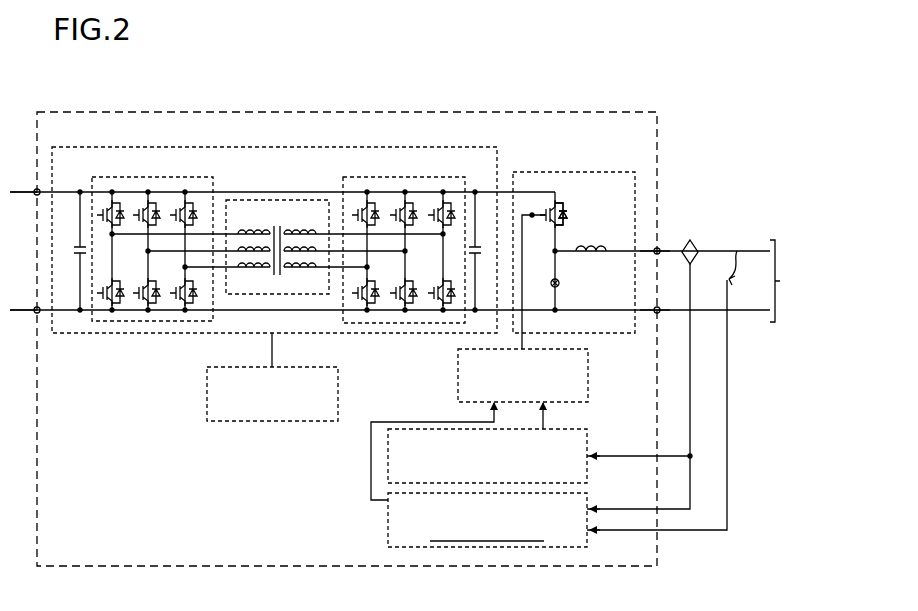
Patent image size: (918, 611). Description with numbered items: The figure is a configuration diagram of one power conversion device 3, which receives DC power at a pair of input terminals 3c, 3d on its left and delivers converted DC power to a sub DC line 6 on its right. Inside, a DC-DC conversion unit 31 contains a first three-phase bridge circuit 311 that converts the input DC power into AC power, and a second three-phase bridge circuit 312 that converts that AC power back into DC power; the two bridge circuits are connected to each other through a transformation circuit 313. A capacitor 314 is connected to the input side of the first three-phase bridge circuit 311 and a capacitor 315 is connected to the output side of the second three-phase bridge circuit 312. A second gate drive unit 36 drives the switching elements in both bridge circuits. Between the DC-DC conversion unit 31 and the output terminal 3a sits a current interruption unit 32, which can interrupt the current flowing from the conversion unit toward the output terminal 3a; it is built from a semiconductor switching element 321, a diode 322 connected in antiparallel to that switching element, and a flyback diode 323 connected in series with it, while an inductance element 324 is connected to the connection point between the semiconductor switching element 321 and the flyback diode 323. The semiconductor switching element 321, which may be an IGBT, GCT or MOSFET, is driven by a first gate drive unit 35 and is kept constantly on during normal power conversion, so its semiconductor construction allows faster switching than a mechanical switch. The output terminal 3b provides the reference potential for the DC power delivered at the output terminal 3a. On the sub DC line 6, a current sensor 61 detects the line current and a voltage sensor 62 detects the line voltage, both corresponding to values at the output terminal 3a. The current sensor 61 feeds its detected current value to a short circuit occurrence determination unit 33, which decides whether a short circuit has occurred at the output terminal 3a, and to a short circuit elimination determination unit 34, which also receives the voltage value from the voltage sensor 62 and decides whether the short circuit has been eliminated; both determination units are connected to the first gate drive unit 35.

The power conversion device 3 is at (487, 112).
The DC-DC conversion unit 31 is at (255, 147).
The current interruption unit 32 is at (580, 172).
The short circuit occurrence determination unit 33 is at (587, 432).
The short circuit elimination determination unit 34 is at (388, 536).
The first gate drive unit 35 is at (458, 369).
The second gate drive unit 36 is at (207, 389).
The first three-phase bridge circuit 311 is at (220, 310).
The second three-phase bridge circuit 312 is at (344, 186).
The transformation circuit 313 is at (277, 200).
The capacitor 314 is at (77, 246).
The capacitor 315 is at (477, 246).
The semiconductor switching element 321 is at (549, 243).
The diode 322 is at (574, 206).
The flyback diode 323 is at (563, 284).
The inductance element 324 is at (598, 242).
The output terminal 3a is at (660, 255).
The output terminal 3b is at (660, 314).
The input terminal 3c is at (36, 196).
The input terminal 3d is at (36, 314).
The sub DC line 6 is at (788, 281).
The current sensor 61 is at (690, 240).
The voltage sensor 62 is at (738, 251).